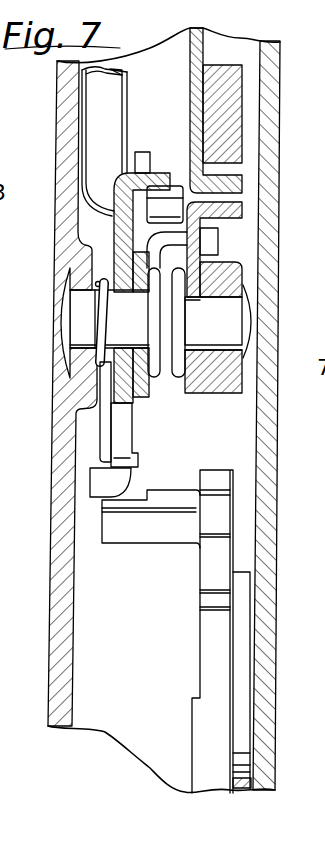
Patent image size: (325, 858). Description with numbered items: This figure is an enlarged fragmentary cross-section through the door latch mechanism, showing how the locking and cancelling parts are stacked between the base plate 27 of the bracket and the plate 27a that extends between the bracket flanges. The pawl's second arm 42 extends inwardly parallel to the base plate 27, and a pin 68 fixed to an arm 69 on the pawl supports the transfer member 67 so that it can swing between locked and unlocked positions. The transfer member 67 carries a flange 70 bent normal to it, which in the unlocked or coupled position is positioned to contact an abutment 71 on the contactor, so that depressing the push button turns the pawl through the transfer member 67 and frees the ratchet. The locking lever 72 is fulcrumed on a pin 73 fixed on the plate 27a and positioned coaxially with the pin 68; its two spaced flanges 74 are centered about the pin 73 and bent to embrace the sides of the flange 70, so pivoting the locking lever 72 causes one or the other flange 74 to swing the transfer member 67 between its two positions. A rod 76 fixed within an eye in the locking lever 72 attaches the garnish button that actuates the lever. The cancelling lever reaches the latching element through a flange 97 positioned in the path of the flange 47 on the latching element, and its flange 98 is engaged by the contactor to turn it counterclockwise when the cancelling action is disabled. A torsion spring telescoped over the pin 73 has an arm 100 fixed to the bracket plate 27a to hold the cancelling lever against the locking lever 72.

The base plate 27 is at (276, 531).
The plate 27a is at (53, 581).
The second arm 42 is at (233, 143).
The flange 47 is at (153, 538).
The transfer member 67 is at (197, 404).
The pin 68 is at (234, 328).
The arm 69 is at (236, 295).
The flange 70 is at (240, 218).
The abutment 71 is at (243, 185).
The locking lever 72 is at (143, 403).
The pin 73 is at (77, 343).
The flanges 74 is at (213, 243).
The rod 76 is at (90, 92).
The flange 97 is at (92, 485).
The flange 98 is at (151, 181).
The arm 100 is at (105, 448).